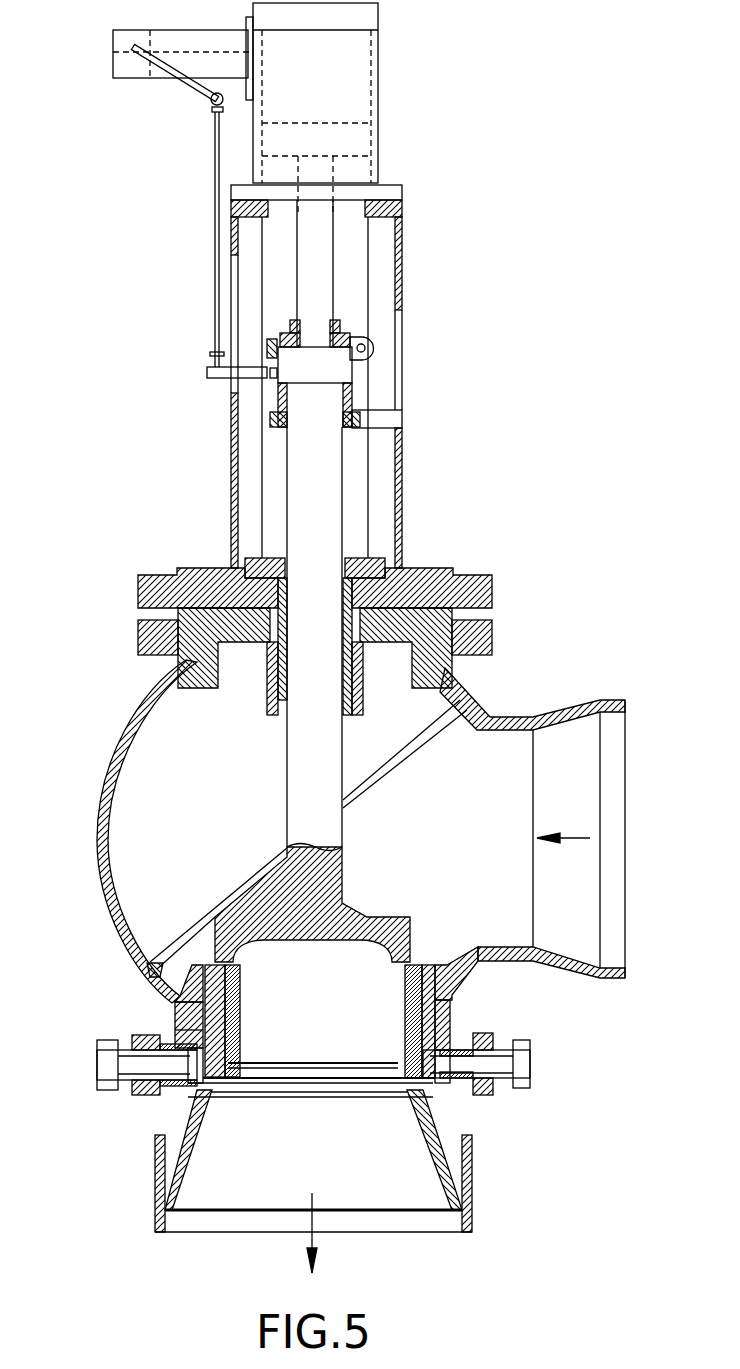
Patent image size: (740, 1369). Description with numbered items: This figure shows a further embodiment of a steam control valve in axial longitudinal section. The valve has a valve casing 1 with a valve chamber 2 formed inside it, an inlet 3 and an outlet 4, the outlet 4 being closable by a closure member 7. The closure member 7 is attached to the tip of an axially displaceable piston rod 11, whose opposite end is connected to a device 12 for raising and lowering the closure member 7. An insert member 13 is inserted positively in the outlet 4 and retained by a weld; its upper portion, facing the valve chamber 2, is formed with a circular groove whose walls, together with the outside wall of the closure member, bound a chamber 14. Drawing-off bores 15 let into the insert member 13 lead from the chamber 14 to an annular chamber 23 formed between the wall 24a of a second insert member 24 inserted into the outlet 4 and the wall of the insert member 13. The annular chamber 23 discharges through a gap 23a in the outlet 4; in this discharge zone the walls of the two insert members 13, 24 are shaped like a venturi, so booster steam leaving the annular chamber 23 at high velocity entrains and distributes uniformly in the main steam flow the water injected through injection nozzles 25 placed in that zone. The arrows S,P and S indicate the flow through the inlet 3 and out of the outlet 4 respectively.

The valve casing 1 is at (107, 790).
The valve chamber 2 is at (150, 750).
The inlet 3 is at (565, 728).
The outlet 4 is at (188, 1190).
The closure member 7 is at (220, 925).
The piston rod 11 is at (297, 593).
The device for raising and lowering the closure member 12 is at (360, 75).
The insert member 13 is at (452, 972).
The chamber 14 is at (225, 968).
The drawing-off bores 15 is at (150, 962).
The annular chamber 23 is at (192, 1012).
The gap 23a is at (435, 1082).
The second insert member 24 is at (433, 1010).
The wall of the second insert member 24a is at (197, 1030).
The injection nozzles 25 is at (102, 1068).
The flow direction of steam S is at (313, 1218).
The flow direction of steam and product S,P is at (590, 838).